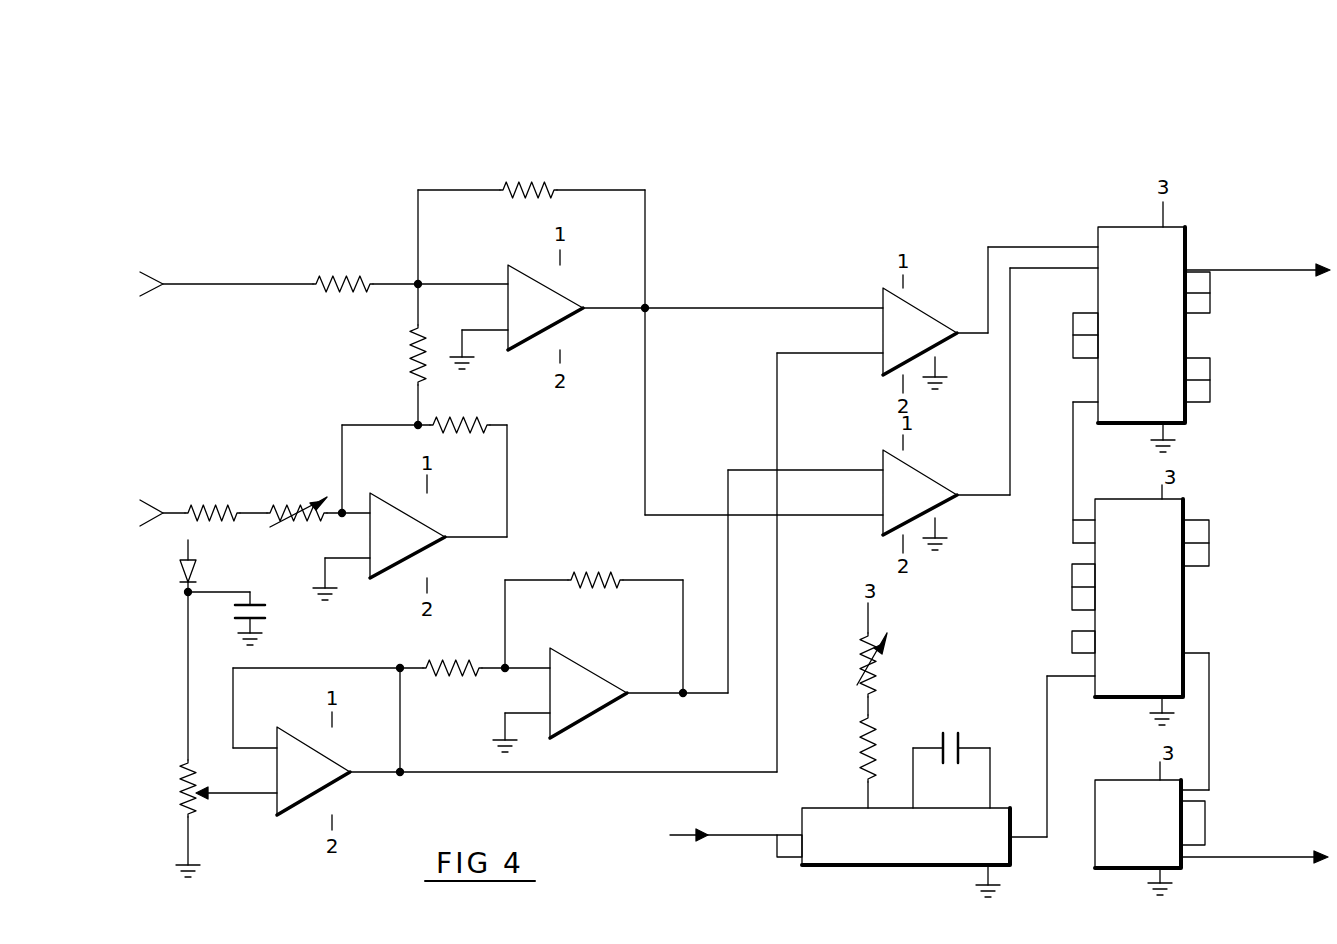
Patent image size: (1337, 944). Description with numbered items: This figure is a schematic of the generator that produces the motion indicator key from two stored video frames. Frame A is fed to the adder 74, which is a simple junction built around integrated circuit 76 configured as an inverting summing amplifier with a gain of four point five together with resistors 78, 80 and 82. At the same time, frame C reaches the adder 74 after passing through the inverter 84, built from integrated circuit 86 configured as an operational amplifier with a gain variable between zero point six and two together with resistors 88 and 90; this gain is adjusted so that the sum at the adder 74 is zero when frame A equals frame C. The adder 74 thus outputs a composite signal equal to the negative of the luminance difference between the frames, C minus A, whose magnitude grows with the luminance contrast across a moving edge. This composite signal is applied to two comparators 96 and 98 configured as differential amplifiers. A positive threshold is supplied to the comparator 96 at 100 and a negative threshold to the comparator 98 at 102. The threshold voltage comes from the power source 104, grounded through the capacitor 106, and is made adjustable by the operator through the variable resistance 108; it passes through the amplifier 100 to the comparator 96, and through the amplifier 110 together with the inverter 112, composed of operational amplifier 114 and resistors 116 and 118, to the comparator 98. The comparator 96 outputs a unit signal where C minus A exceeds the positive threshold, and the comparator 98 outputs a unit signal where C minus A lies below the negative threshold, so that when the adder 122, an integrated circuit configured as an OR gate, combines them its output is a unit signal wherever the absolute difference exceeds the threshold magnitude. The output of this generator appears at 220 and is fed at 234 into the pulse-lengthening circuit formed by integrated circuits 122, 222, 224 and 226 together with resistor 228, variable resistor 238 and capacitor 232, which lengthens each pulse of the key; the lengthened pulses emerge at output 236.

The adder 74 is at (530, 286).
The integrated circuit 76 is at (511, 264).
The resistor 78 is at (337, 274).
The resistor 80 is at (410, 366).
The resistor 82 is at (551, 187).
The inverter 84 is at (402, 558).
The integrated circuit 86 is at (378, 579).
The resistor 88 is at (296, 506).
The resistor 90 is at (470, 422).
The comparator 96 is at (924, 309).
The comparator 98 is at (920, 492).
The amplifier 100 is at (775, 407).
The negative threshold input 102 is at (796, 470).
The power source 104 is at (195, 548).
The capacitor 106 is at (267, 620).
The variable resistance 108 is at (181, 762).
The amplifier 110 is at (313, 771).
The inverter 112 is at (590, 682).
The operational amplifier 114 is at (588, 664).
The resistor 116 is at (614, 576).
The resistor 118 is at (444, 662).
The adder 122 is at (1141, 325).
The output of C−A generator 220 is at (1265, 268).
The integrated circuit 222 is at (1140, 598).
The integrated circuit 224 is at (893, 836).
The integrated circuit 226 is at (1150, 824).
The resistor 228 is at (858, 732).
The capacitor 232 is at (960, 737).
The input 234 is at (680, 832).
The output 236 is at (1265, 855).
The variable resistor 238 is at (858, 650).